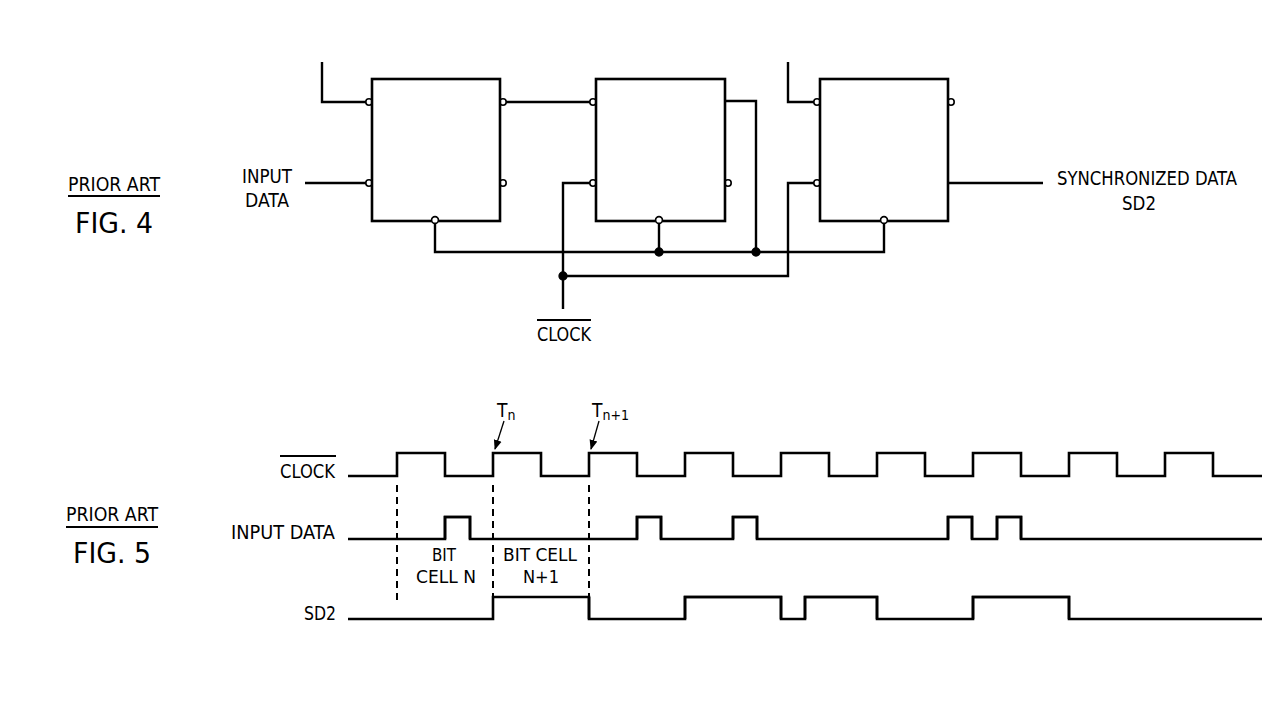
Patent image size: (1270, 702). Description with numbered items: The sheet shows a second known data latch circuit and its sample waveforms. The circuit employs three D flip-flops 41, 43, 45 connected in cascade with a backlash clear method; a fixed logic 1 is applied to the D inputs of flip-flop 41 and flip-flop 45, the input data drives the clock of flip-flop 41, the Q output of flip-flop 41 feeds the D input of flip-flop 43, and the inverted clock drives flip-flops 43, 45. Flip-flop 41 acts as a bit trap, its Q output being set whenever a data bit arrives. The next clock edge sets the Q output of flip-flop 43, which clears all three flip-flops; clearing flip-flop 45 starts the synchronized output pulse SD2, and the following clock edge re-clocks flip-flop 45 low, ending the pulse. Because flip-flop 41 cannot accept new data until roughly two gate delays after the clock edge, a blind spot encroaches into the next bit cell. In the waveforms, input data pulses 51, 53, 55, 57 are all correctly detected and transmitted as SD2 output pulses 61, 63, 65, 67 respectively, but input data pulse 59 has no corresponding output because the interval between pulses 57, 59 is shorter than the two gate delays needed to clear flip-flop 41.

In FIG. 4, the logic 1 is at (565, 70).
In FIG. 4, the flip-flop 41 is at (445, 87).
In FIG. 4, the flip-flop 43 is at (679, 86).
In FIG. 4, the flip-flop 45 is at (903, 86).
In FIG. 5, the input data pulse 51 is at (475, 524).
In FIG. 5, the input data pulse 53 is at (668, 524).
In FIG. 5, the input data pulse 55 is at (764, 524).
In FIG. 5, the input data pulse 57 is at (967, 512).
In FIG. 5, the input data pulse 59 is at (1026, 523).
In FIG. 5, the SD2 output pulse 61 is at (596, 605).
In FIG. 5, the SD2 output pulse 63 is at (745, 593).
In FIG. 5, the SD2 output pulse 65 is at (866, 593).
In FIG. 5, the SD2 output pulse 67 is at (1016, 594).